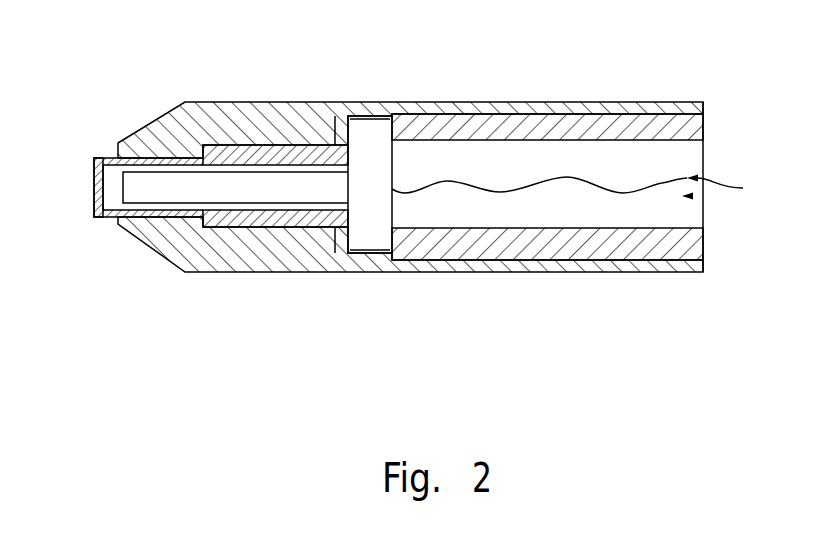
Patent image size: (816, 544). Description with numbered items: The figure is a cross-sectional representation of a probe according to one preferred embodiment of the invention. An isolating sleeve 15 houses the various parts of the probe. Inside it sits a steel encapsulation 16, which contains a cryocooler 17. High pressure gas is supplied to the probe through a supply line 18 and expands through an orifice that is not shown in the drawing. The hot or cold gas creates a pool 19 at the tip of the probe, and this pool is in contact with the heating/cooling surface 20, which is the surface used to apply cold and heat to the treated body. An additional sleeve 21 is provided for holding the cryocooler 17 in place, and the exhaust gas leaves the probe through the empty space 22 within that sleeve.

The isolating sleeve 15 is at (302, 101).
The steel encapsulation 16 is at (260, 215).
The cryocooler 17 is at (152, 190).
The supply line 18 is at (718, 177).
The pool 19 is at (100, 166).
The heating/cooling surface 20 is at (94, 183).
The additional sleeve 21 is at (588, 247).
The empty space 22 is at (692, 196).